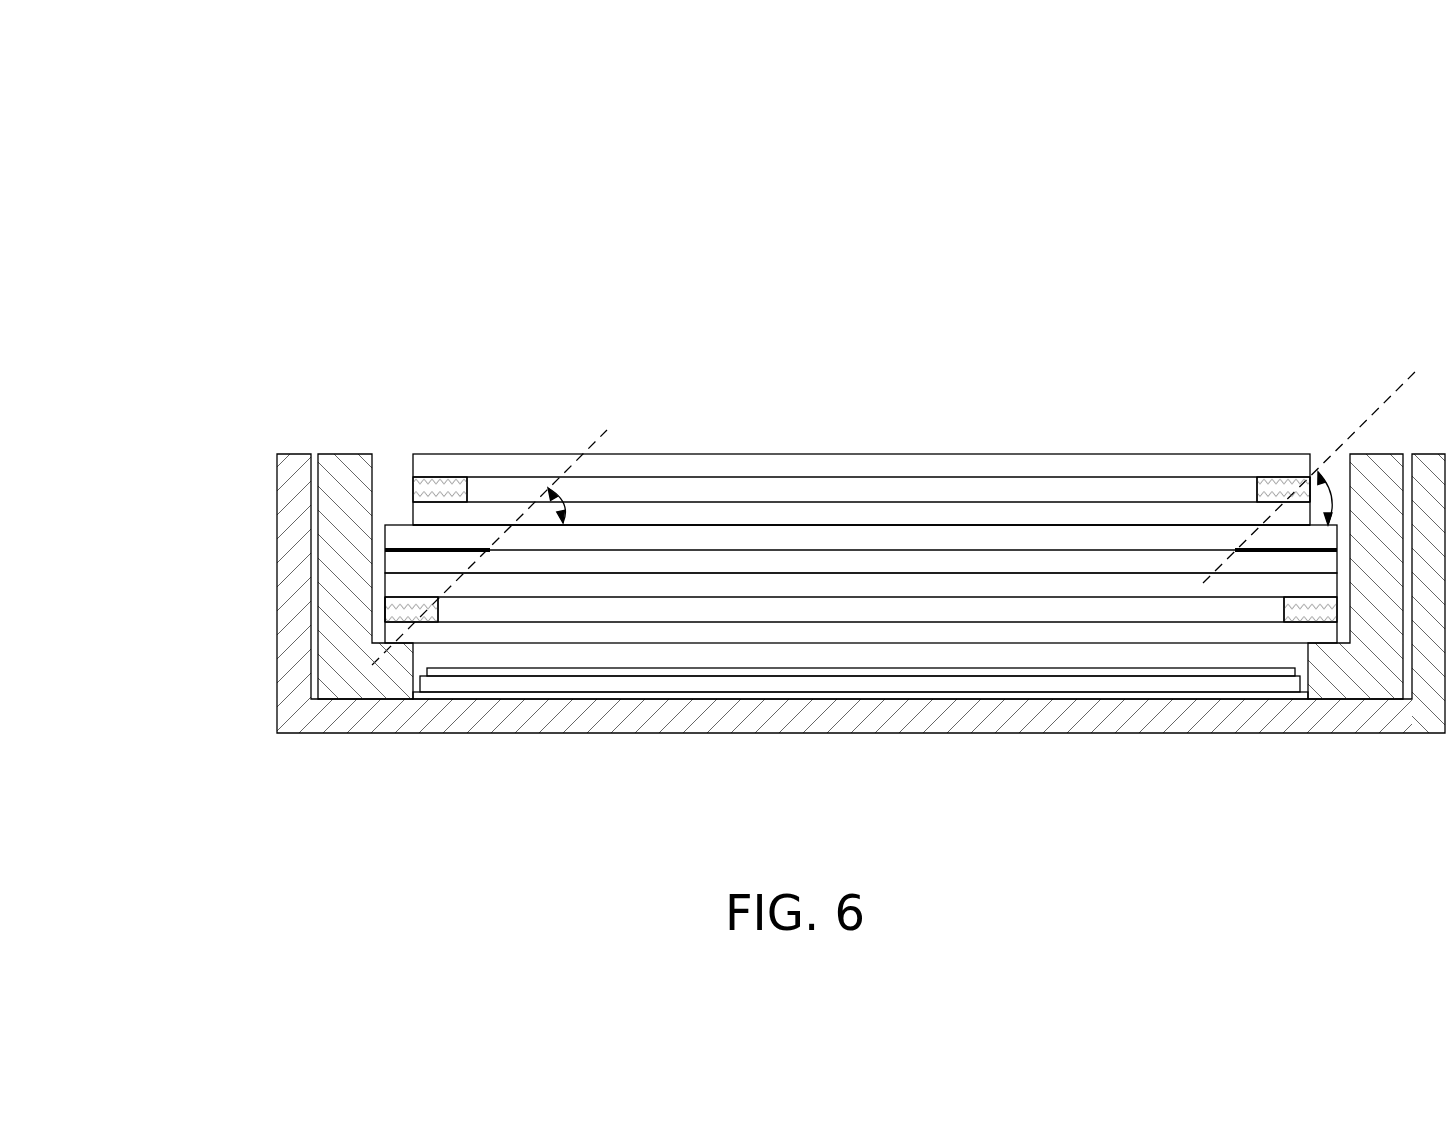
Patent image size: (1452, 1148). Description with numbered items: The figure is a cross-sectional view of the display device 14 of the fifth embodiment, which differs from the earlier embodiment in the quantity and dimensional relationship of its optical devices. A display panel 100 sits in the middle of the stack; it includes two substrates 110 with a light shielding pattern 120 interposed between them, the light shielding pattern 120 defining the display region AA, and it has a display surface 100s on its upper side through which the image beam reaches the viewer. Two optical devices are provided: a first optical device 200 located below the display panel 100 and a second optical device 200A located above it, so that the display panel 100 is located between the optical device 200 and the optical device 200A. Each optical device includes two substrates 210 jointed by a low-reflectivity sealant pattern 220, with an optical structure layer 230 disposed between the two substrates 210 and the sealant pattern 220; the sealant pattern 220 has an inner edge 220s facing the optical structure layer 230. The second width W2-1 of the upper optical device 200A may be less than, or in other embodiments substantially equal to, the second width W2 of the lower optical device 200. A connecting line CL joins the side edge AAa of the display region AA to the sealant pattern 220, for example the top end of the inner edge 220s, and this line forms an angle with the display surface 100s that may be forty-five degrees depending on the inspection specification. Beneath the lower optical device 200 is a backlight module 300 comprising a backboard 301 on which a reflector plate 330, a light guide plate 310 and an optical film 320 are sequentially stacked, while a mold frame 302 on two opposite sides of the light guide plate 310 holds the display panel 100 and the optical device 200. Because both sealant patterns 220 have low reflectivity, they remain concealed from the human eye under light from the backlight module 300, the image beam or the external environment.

The display device 14 is at (1440, 883).
The display panel 100 is at (196, 505).
The substrates 110 is at (408, 537).
The light shielding pattern 120 is at (385, 550).
The display surface 100s is at (872, 513).
The optical device 200 is at (1262, 812).
The optical device 200A is at (1150, 380).
The substrates 210 is at (987, 515).
The low-reflectivity sealant pattern 220 is at (1241, 493).
The inner edge 220s is at (1242, 481).
The optical structure layer 230 is at (1087, 490).
The backlight module 300 is at (181, 70).
The backboard 301 is at (885, 768).
The mold frame 302 is at (1368, 768).
The light guide plate 310 is at (740, 768).
The optical film 320 is at (672, 768).
The reflector plate 330 is at (813, 768).
The display region AA is at (1235, 290).
The side edge AAa is at (500, 550).
The second width W2 is at (1337, 525).
The second width W2-1 is at (1309, 454).
The connecting line CL is at (597, 440).